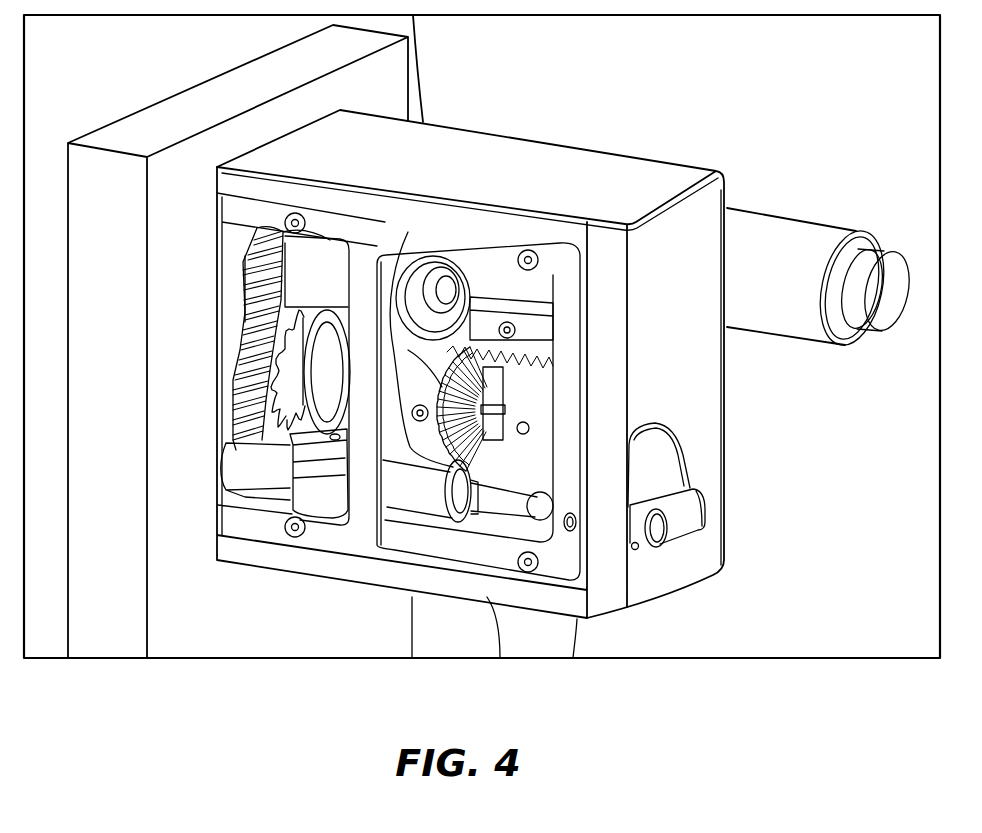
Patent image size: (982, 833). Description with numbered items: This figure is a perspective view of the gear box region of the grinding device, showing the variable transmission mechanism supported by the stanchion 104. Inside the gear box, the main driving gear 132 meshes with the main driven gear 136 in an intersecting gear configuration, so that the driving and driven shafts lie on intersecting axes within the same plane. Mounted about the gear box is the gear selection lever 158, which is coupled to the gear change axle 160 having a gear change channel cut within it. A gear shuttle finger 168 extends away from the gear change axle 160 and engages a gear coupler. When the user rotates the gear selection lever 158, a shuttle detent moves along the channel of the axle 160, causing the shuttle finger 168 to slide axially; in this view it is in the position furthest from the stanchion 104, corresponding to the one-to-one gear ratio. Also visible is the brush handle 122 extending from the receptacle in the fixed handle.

The stanchion 104 is at (160, 118).
The gear shuttle finger 168 is at (345, 348).
The main driving gear 132 is at (433, 378).
The main driven gear 136 is at (525, 342).
The gear change axle 160 is at (502, 507).
The brush handle 122 is at (893, 287).
The gear selection lever 158 is at (695, 508).